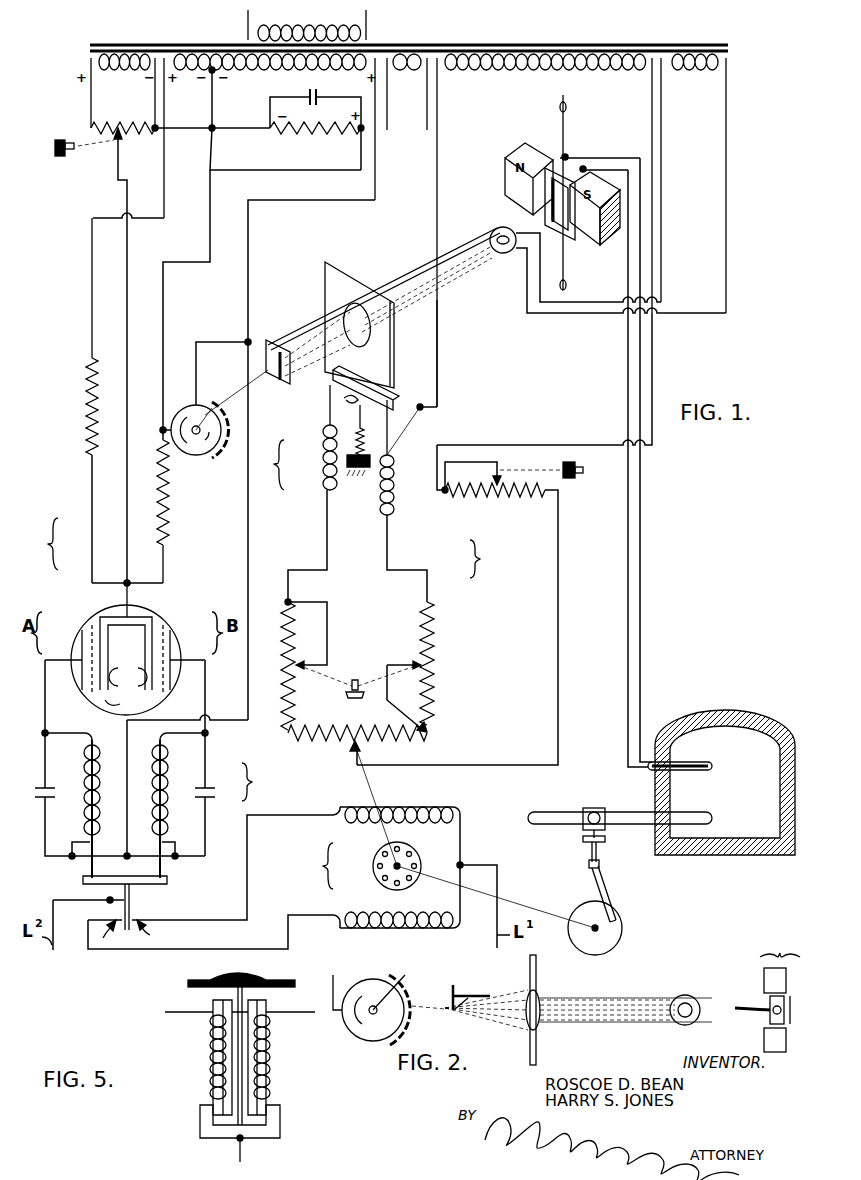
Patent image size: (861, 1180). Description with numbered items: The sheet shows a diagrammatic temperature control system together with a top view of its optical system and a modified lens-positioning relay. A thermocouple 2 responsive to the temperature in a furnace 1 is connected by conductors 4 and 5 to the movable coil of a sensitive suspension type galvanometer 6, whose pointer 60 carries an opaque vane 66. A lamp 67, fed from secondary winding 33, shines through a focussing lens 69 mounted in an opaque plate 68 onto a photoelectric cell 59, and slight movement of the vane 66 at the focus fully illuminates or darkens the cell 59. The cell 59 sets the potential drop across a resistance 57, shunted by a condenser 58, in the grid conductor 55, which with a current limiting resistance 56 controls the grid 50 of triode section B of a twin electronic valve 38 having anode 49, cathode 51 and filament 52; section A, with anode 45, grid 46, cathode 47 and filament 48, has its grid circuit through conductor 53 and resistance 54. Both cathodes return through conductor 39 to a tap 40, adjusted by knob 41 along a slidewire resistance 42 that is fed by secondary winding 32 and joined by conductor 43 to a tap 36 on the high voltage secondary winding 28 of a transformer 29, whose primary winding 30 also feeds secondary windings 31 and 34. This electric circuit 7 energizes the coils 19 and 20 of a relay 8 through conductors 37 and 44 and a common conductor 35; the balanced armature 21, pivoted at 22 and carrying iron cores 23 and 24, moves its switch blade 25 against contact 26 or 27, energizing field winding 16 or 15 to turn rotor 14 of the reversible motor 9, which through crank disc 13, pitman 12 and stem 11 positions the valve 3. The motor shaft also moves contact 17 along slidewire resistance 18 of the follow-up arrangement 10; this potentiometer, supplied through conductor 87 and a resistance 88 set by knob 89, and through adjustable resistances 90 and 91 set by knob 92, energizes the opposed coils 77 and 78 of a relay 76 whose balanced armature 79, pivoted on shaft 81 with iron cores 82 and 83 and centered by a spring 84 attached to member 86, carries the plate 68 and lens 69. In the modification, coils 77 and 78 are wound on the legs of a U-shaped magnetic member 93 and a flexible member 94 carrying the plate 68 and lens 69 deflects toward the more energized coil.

In FIG. 1, the furnace 1 is at (733, 712).
In FIG. 1, the thermocouple 2 is at (697, 764).
In FIG. 1, the valve 3 is at (594, 812).
In FIG. 1, the conductor 4 is at (642, 568).
In FIG. 1, the conductor 5 is at (626, 568).
In FIG. 1, the galvanometer 6 is at (587, 116).
In FIG. 2, the galvanometer 6 is at (780, 944).
In FIG. 1, the electric circuit 7 is at (45, 544).
In FIG. 1, the relay 8 is at (196, 788).
In FIG. 1, the reversible electrical motor 9 is at (321, 866).
In FIG. 1, the follow-up arrangement 10 is at (488, 559).
In FIG. 1, the stem 11 is at (602, 853).
In FIG. 1, the pitman 12 is at (605, 890).
In FIG. 1, the crank disc 13 is at (619, 935).
In FIG. 1, the motor rotor 14 is at (373, 885).
In FIG. 1, the field winding 15 is at (414, 826).
In FIG. 1, the field winding 16 is at (418, 913).
In FIG. 1, the contact 17 is at (350, 752).
In FIG. 1, the slidewire resistance 18 is at (326, 740).
In FIG. 1, the coil 19 is at (86, 828).
In FIG. 1, the coil 20 is at (166, 830).
In FIG. 1, the balanced armature 21 is at (148, 886).
In FIG. 1, the pivot 22 is at (131, 876).
In FIG. 1, the iron core 23 is at (85, 769).
In FIG. 1, the iron core 24 is at (160, 769).
In FIG. 1, the switch blade 25 is at (131, 913).
In FIG. 1, the stationary contact 26 is at (103, 935).
In FIG. 1, the stationary contact 27 is at (142, 928).
In FIG. 1, the high voltage secondary winding 28 is at (272, 70).
In FIG. 1, the transformer 29 is at (434, 45).
In FIG. 1, the primary winding 30 is at (307, 28).
In FIG. 1, the secondary winding 31 is at (521, 72).
In FIG. 1, the secondary winding 32 is at (134, 72).
In FIG. 1, the secondary winding 33 is at (676, 72).
In FIG. 1, the secondary winding 34 is at (411, 69).
In FIG. 1, the common conductor 35 is at (250, 290).
In FIG. 1, the tap 36 is at (210, 72).
In FIG. 1, the conductor 37 is at (45, 716).
In FIG. 1, the twin type electronic valve 38 is at (85, 615).
In FIG. 1, the conductor 39 is at (130, 432).
In FIG. 1, the tap 40 is at (116, 151).
In FIG. 1, the knob 41 is at (56, 158).
In FIG. 1, the slidewire resistance 42 is at (132, 134).
In FIG. 1, the conductor 43 is at (214, 110).
In FIG. 1, the conductor 44 is at (207, 697).
In FIG. 1, the anode 45 is at (82, 645).
In FIG. 1, the control grid 46 is at (90, 634).
In FIG. 1, the cathode 47 is at (99, 688).
In FIG. 1, the heating filament 48 is at (105, 704).
In FIG. 1, the anode 49 is at (174, 645).
In FIG. 1, the control grid 50 is at (170, 614).
In FIG. 1, the cathode 51 is at (163, 690).
In FIG. 1, the heating filament 52 is at (147, 700).
In FIG. 1, the conductor 53 is at (85, 478).
In FIG. 1, the current limiting resistance 54 is at (86, 402).
In FIG. 1, the conductor 55 is at (167, 290).
In FIG. 1, the current limiting resistance 56 is at (172, 508).
In FIG. 1, the resistance 57 is at (308, 136).
In FIG. 1, the battery 58 is at (308, 92).
In FIG. 1, the photoelectric cell 59 is at (207, 453).
In FIG. 2, the photoelectric cell 59 is at (368, 977).
In FIG. 1, the pointer 60 is at (406, 262).
In FIG. 2, the pointer 60 is at (748, 1009).
In FIG. 1, the vane 66 is at (279, 376).
In FIG. 2, the vane 66 is at (462, 990).
In FIG. 1, the lamp 67 is at (505, 259).
In FIG. 2, the lamp 67 is at (682, 995).
In FIG. 1, the opaque plate 68 is at (382, 354).
In FIG. 2, the opaque plate 68 is at (540, 1050).
In FIG. 5, the opaque plate 68 is at (288, 977).
In FIG. 1, the focussing lens 69 is at (375, 324).
In FIG. 2, the focussing lens 69 is at (543, 998).
In FIG. 5, the focussing lens 69 is at (243, 975).
In FIG. 1, the relay 76 is at (458, 325).
In FIG. 1, the relay coil 77 is at (334, 484).
In FIG. 5, the relay coil 77 is at (206, 1045).
In FIG. 1, the relay coil 78 is at (383, 519).
In FIG. 5, the relay coil 78 is at (270, 1058).
In FIG. 1, the balanced armature 79 is at (394, 400).
In FIG. 1, the shaft 81 is at (347, 404).
In FIG. 1, the iron core 82 is at (322, 448).
In FIG. 1, the iron core 83 is at (393, 484).
In FIG. 1, the spring 84 is at (372, 441).
In FIG. 1, the member 86 is at (422, 408).
In FIG. 1, the conductor 87 is at (654, 350).
In FIG. 1, the resistance 88 is at (509, 501).
In FIG. 1, the knob 89 is at (586, 477).
In FIG. 1, the adjustable resistance 90 is at (280, 687).
In FIG. 1, the adjustable resistance 91 is at (435, 677).
In FIG. 1, the knob 92 is at (346, 702).
In FIG. 5, the U-shaped member 93 is at (260, 1115).
In FIG. 5, the flexible member 94 is at (237, 1073).